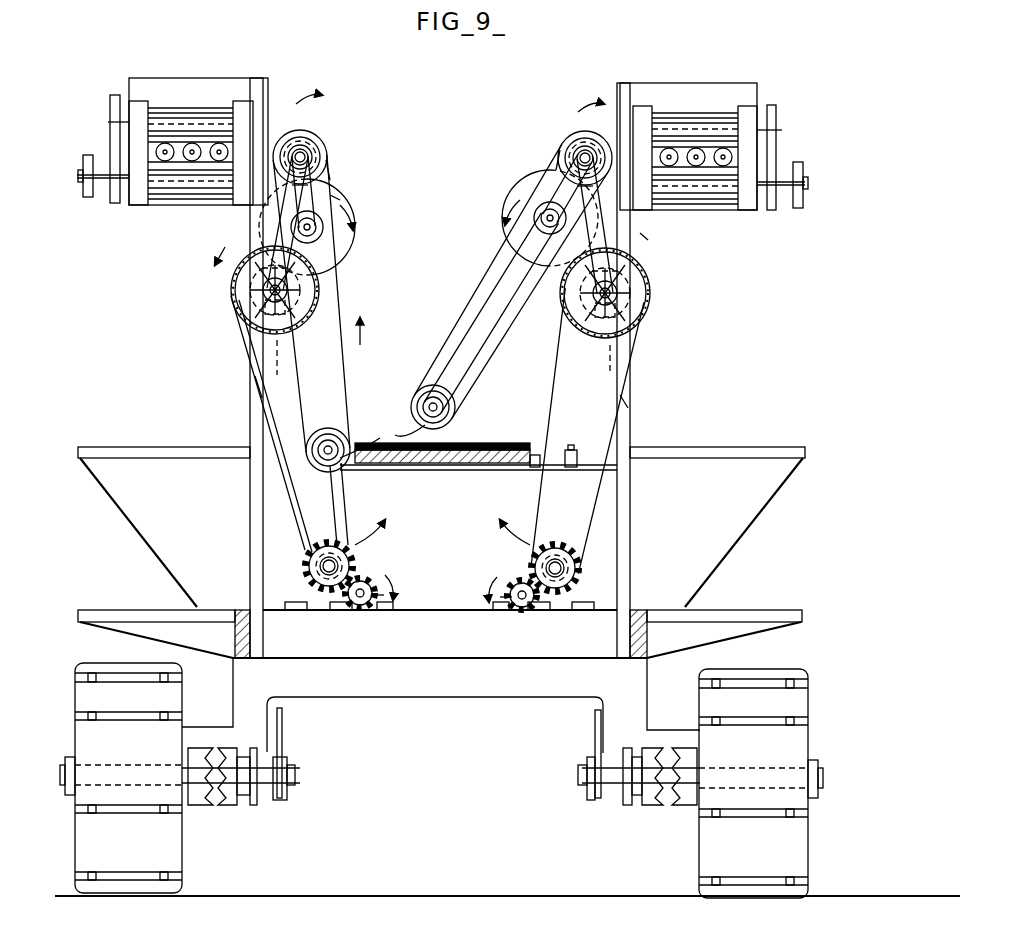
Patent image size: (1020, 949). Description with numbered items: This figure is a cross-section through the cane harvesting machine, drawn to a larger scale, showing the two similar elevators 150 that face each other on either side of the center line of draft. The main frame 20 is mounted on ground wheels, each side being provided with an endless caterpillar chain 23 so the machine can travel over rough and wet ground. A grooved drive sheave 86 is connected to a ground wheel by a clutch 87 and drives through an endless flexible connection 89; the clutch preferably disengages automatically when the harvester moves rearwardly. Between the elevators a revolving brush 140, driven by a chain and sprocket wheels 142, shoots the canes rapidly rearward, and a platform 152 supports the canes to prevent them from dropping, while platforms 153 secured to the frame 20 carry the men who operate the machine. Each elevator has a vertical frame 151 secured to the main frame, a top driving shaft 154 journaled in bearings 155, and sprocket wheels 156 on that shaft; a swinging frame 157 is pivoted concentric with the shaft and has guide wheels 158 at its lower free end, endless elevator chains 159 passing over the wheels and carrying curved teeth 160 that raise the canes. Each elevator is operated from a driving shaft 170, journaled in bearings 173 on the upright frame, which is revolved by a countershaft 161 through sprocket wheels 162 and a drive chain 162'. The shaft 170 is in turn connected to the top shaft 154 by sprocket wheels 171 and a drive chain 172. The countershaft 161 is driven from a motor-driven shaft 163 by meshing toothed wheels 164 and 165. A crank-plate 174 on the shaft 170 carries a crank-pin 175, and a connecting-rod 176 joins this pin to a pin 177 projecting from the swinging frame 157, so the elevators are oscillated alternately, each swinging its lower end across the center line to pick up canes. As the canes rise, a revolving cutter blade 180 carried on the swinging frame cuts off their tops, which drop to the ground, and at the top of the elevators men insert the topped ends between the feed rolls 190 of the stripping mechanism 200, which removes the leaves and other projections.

The main frame 20 is at (245, 655).
The endless caterpillar chain 23 is at (168, 852).
The grooved drive sheave 86 is at (280, 797).
The clutch 87 is at (208, 790).
The endless flexible connection 89 is at (288, 726).
The revolving brush 140 is at (485, 445).
The sprocket wheels 142 is at (572, 446).
The elevator 150 is at (330, 175).
The vertical frame 151 is at (252, 508).
The platform 152 is at (465, 470).
The platform 153 is at (125, 450).
The driving shaft 154 is at (302, 168).
The bearings 155 is at (273, 177).
The sprocket wheels 156 is at (312, 183).
The swinging frame 157 is at (320, 345).
The guide wheels 158 is at (330, 433).
The endless elevator chains 159 is at (345, 287).
The curved teeth 160 is at (282, 112).
The countershaft 161 is at (320, 576).
The sprocket wheels 162 is at (430, 431).
The drive chain 162' is at (443, 392).
The shaft 163 is at (358, 605).
The toothed wheel 164 is at (338, 566).
The toothed wheel 165 is at (385, 601).
The driving shaft 170 is at (268, 293).
The sprocket wheels 171 is at (300, 160).
The drive chain 172 is at (337, 198).
The bearings 173 is at (436, 366).
The crank-plate 174 is at (232, 297).
The crank-pin 175 is at (222, 273).
The connecting-rod 176 is at (320, 240).
The pin 177 is at (352, 213).
The revolving cutter blade 180 is at (340, 207).
The feed rolls 190 is at (167, 117).
The stripping mechanism 200 is at (148, 153).